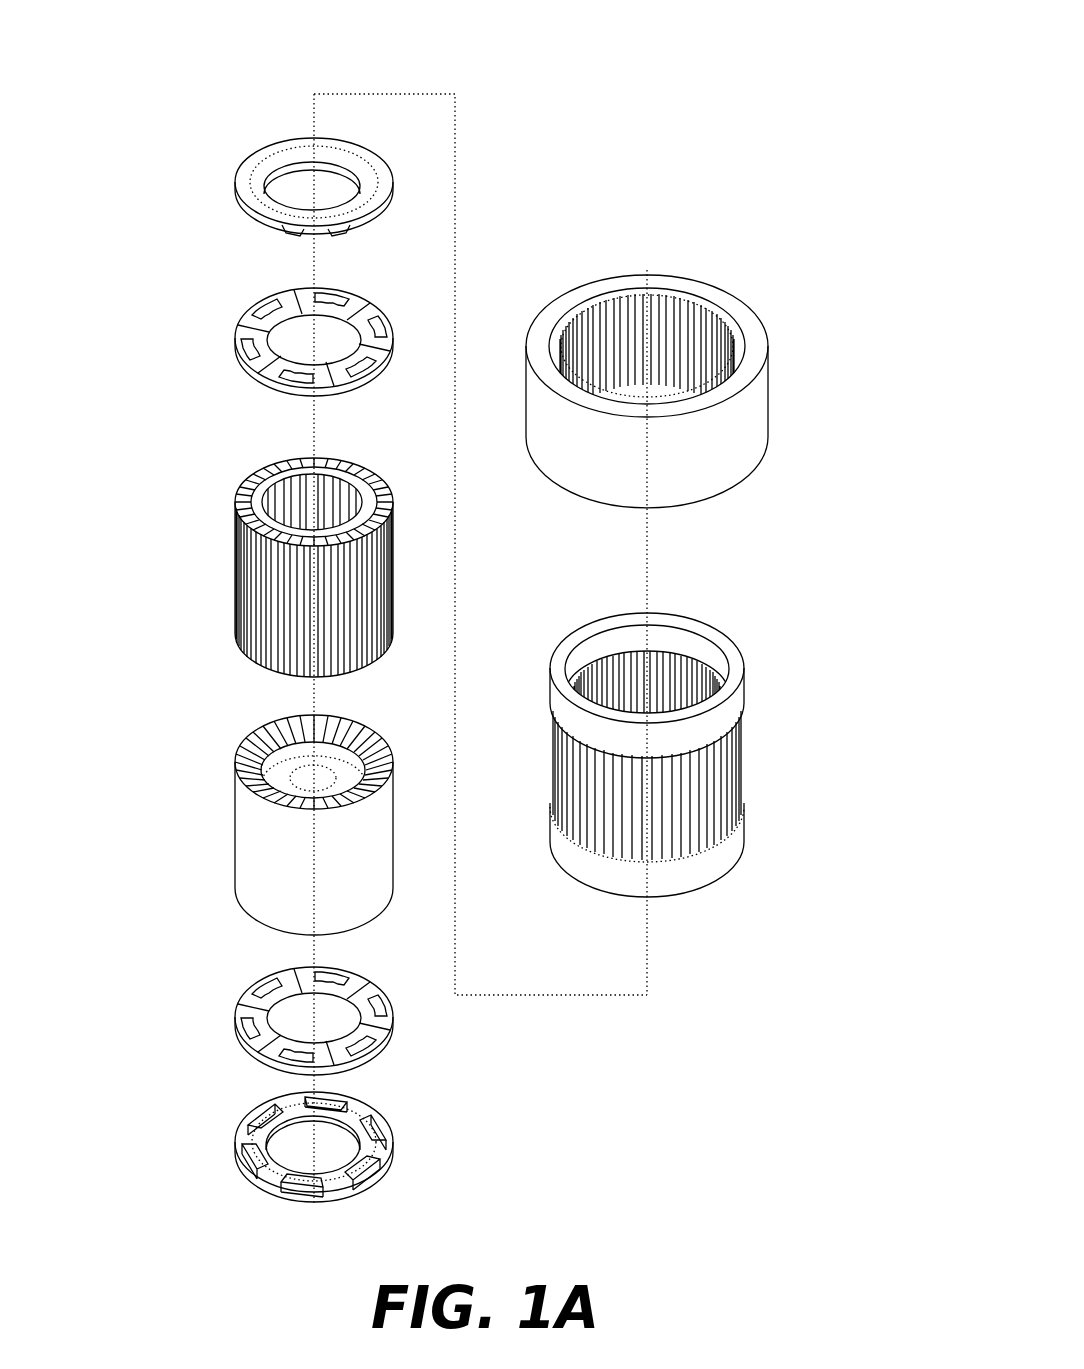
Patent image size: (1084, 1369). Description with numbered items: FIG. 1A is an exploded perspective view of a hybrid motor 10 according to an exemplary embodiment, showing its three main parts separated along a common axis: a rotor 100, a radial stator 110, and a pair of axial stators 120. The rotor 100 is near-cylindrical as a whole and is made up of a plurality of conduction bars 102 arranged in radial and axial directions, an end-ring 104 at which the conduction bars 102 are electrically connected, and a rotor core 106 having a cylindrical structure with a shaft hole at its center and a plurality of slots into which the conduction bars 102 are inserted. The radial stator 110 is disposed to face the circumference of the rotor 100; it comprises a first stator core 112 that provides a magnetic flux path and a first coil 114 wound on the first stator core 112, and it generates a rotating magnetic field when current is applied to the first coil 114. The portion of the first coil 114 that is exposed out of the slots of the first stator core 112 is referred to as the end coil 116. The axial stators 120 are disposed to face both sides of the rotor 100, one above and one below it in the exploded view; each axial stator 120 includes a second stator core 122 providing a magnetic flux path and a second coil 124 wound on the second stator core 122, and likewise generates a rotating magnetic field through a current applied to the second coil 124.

The heat exchanger assembly 10 is at (143, 37).
The rotor 100 is at (156, 445).
The conduction bars 102 is at (240, 514).
The end-ring 104 is at (242, 490).
The rotor core 106 is at (242, 810).
The radial stator 110 is at (845, 400).
The first stator core 112 is at (766, 402).
The first coil 114 is at (746, 776).
The end coil 116 is at (746, 690).
The axial stators 120 is at (166, 210).
The second stator core 122 is at (240, 226).
The second coil 124 is at (242, 330).